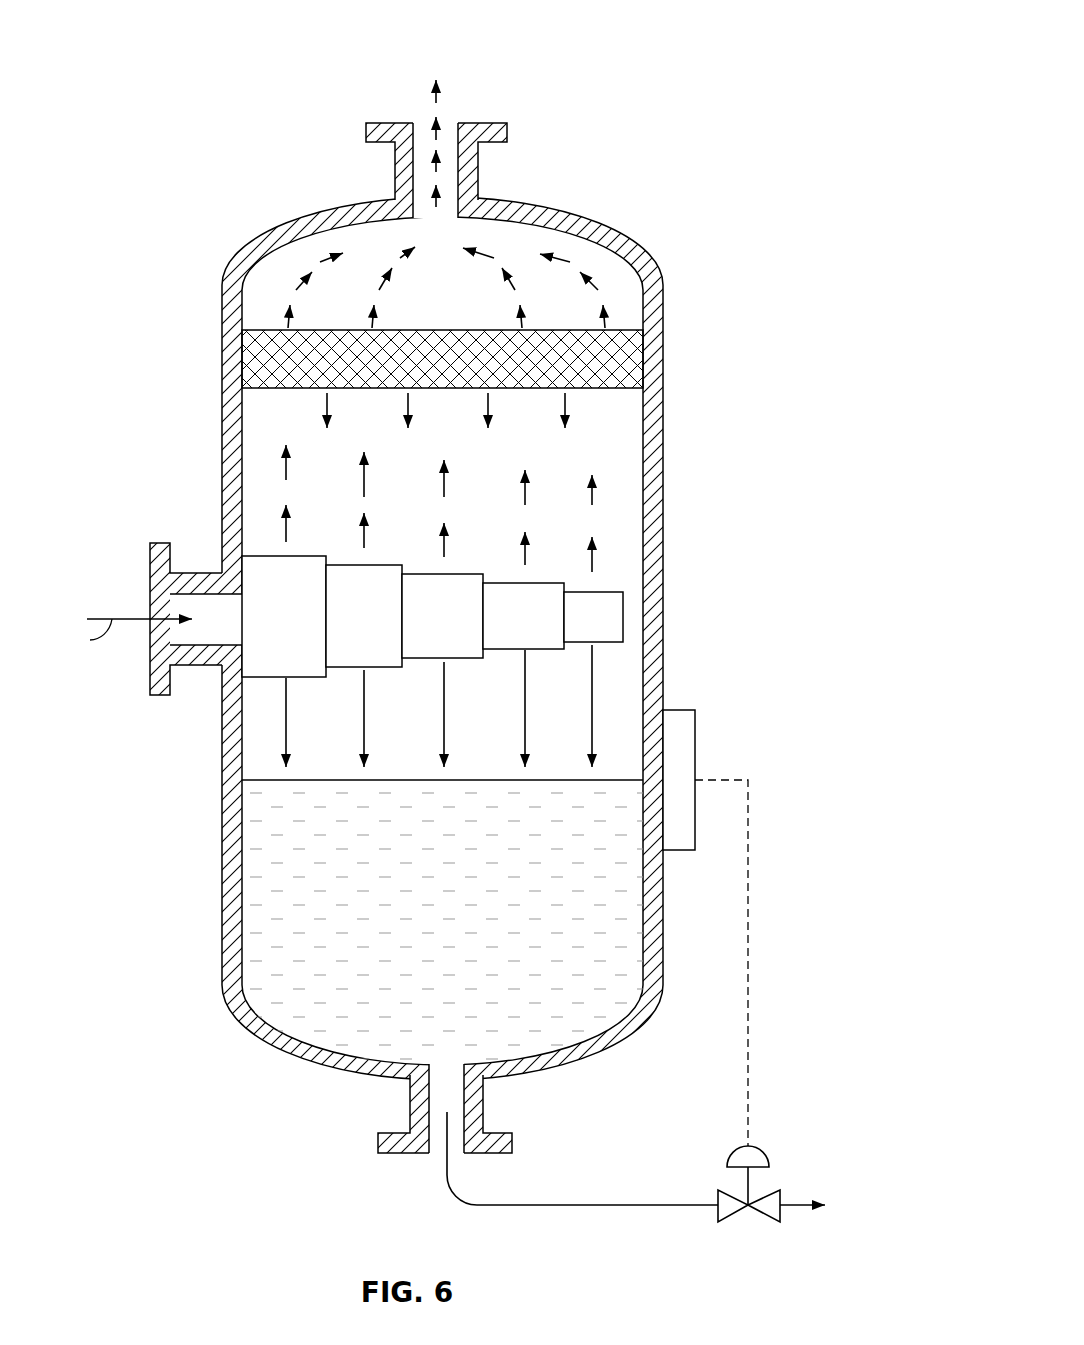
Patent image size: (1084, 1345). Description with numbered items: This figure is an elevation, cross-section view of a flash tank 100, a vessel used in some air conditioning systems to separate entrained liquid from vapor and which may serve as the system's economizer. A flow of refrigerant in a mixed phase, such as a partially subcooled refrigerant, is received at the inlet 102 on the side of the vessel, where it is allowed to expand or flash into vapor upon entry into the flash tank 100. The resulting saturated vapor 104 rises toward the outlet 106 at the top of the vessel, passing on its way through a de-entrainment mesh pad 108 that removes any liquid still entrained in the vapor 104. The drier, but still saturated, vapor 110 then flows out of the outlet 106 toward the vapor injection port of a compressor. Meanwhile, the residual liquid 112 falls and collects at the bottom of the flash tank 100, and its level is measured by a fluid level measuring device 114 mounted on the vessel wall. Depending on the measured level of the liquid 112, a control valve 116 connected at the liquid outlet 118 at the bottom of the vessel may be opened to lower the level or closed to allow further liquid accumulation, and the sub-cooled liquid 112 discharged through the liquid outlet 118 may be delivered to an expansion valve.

The flash tank 100 is at (610, 50).
The inlet 102 is at (200, 655).
The saturated vapor 104 is at (593, 495).
The outlet 106 is at (470, 175).
The de-entrainment mesh pad 108 is at (623, 358).
The saturated vapor 110 is at (444, 103).
The residual liquid 112 is at (595, 697).
The fluid level measuring device 114 is at (678, 752).
The control valve 116 is at (727, 1210).
The liquid outlet 118 is at (425, 1093).